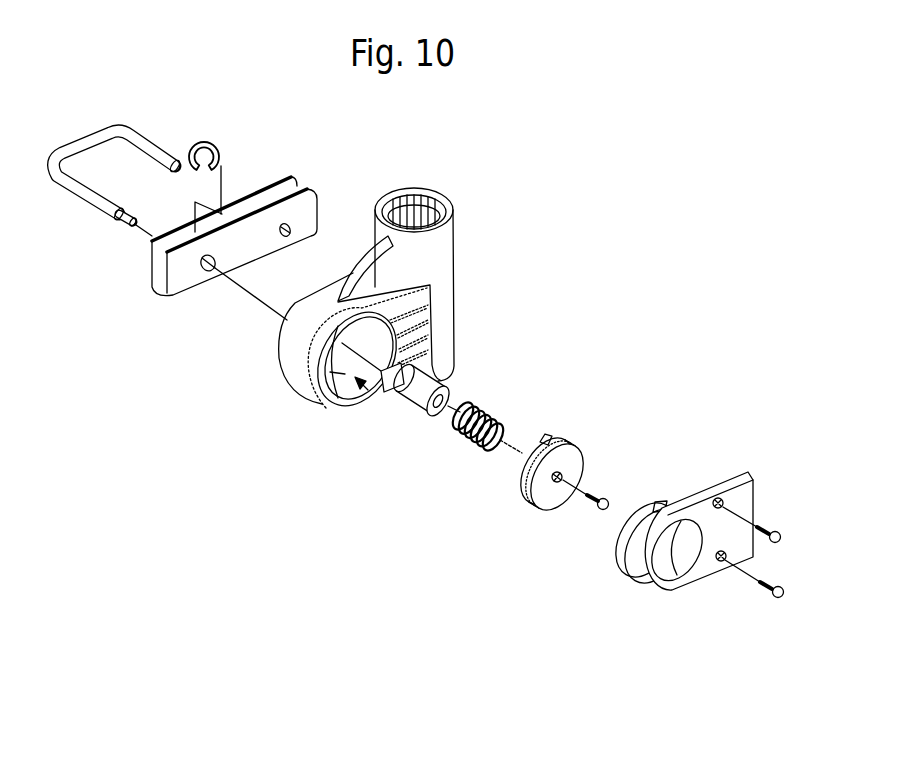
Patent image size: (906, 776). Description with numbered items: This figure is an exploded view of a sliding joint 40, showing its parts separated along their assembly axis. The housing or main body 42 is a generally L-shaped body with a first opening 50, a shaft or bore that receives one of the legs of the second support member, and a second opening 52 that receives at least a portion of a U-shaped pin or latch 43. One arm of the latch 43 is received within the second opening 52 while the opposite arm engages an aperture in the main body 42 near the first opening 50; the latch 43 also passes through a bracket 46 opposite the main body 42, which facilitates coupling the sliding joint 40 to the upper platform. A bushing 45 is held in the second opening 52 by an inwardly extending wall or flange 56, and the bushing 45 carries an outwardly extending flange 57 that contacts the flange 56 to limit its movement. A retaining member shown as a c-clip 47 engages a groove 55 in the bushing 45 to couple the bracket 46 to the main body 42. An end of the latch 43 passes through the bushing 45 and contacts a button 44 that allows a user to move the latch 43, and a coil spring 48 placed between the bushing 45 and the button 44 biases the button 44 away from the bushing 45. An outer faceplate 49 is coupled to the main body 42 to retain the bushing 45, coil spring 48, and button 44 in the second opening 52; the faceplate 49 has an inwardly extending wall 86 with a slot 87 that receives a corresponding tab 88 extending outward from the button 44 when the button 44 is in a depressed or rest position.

The sliding joint 40 is at (530, 259).
The main body 42 is at (298, 373).
The latch 43 is at (88, 147).
The button 44 is at (548, 492).
The bushing 45 is at (406, 374).
The bracket 46 is at (152, 268).
The c-clip 47 is at (196, 142).
The coil spring 48 is at (492, 408).
The faceplate 49 is at (742, 502).
The first opening 50 is at (424, 205).
The second opening 52 is at (385, 391).
The groove 55 is at (398, 399).
The flange 56 is at (338, 358).
The outwardly extending flange 57 is at (433, 416).
The inwardly extending wall 86 is at (630, 548).
The slot 87 is at (655, 506).
The tab 88 is at (547, 434).